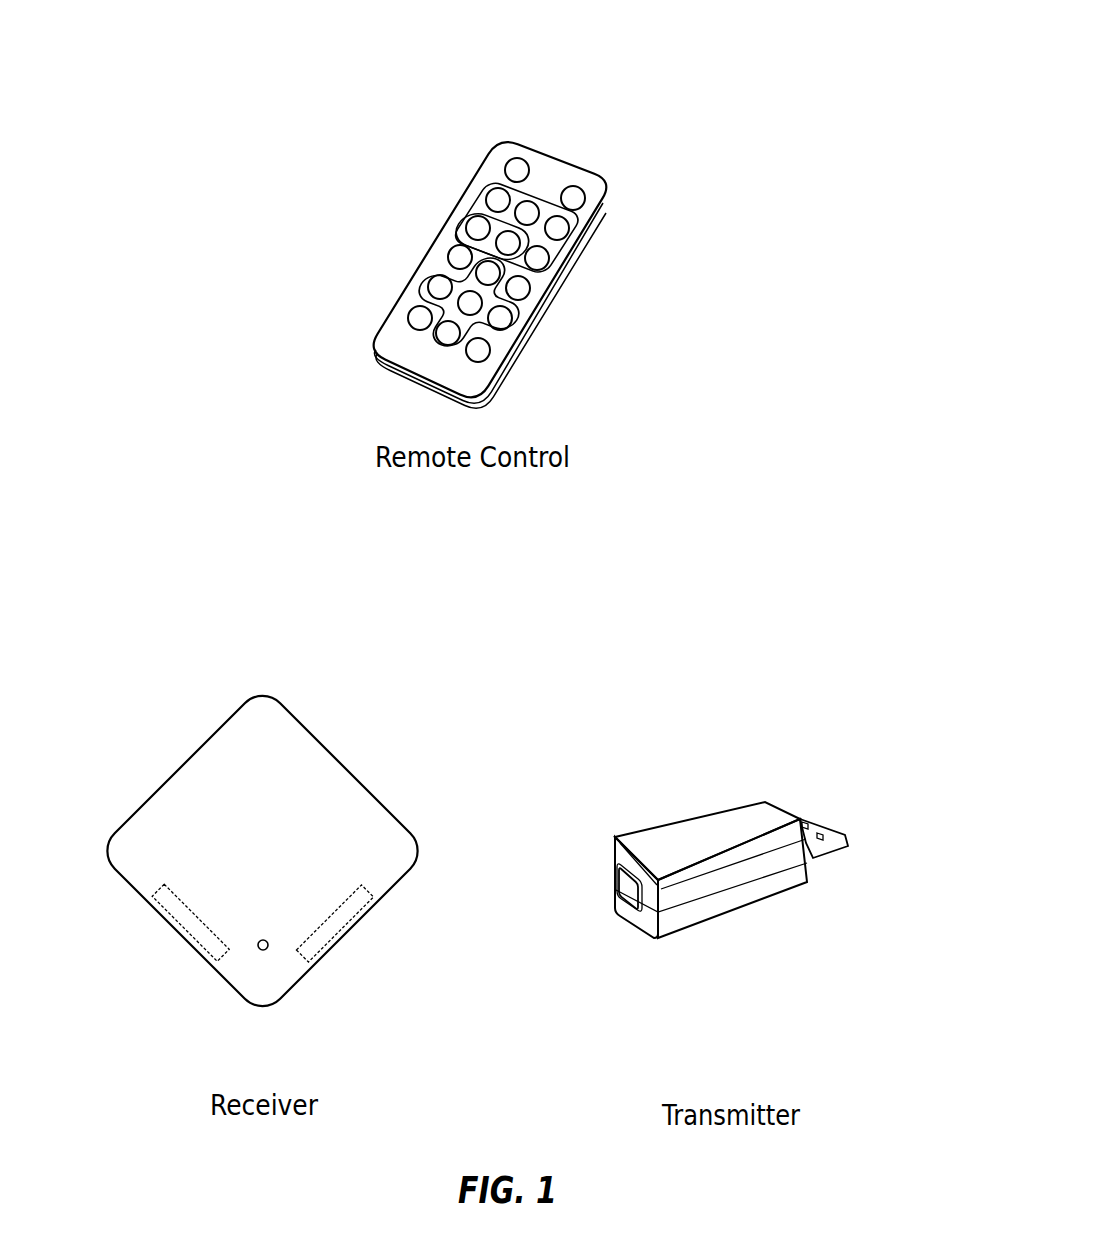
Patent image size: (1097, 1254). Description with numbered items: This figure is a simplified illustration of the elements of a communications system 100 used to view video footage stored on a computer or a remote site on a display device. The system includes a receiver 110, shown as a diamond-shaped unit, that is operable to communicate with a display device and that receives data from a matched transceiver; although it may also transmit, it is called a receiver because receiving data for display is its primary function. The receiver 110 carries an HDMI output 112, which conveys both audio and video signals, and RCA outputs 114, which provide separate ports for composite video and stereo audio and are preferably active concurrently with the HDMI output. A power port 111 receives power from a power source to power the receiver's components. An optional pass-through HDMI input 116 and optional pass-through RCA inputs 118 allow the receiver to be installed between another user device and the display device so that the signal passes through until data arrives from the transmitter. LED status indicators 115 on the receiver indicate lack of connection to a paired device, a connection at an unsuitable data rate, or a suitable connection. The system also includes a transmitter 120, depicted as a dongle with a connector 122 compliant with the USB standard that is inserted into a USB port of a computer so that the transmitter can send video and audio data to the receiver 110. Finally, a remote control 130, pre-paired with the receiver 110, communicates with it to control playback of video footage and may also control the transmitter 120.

The communications system 100 is at (246, 49).
The receiver 110 is at (352, 650).
The power port 111 is at (267, 1033).
The HDMI output 112 is at (168, 730).
The RCA outputs 114 is at (364, 730).
The status indicators 115 is at (259, 938).
The pass-through HDMI input 116 is at (362, 970).
The pass-through RCA inputs 118 is at (164, 970).
The transmitter 120 is at (715, 670).
The connector 122 is at (823, 822).
The remote control 130 is at (610, 114).